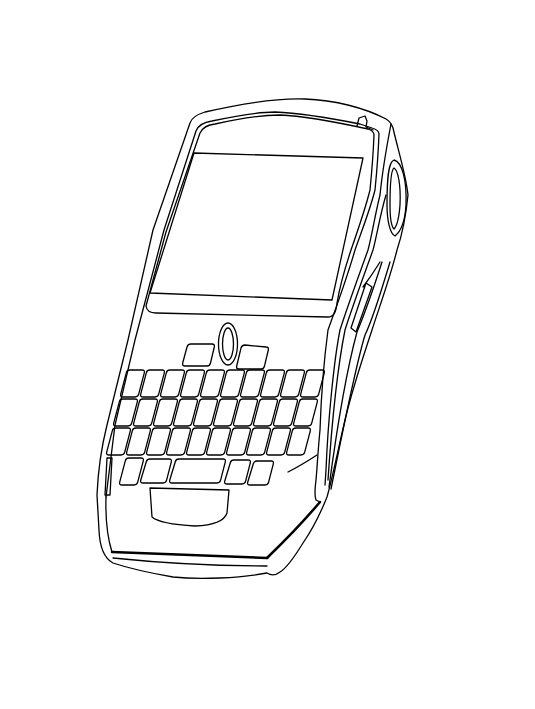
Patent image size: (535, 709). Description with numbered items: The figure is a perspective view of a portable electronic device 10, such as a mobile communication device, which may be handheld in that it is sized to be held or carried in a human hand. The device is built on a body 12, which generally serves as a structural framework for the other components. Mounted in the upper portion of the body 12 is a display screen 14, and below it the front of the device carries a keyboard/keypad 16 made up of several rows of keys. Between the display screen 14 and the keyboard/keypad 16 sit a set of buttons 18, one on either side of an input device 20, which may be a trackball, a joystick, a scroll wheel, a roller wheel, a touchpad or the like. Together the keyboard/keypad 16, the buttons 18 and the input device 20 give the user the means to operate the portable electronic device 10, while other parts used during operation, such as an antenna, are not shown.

The portable electronic device 10 is at (388, 63).
The body 12 is at (395, 143).
The display screen 14 is at (291, 228).
The keyboard/keypad 16 is at (268, 450).
The set of buttons 18 is at (186, 345).
The input device 20 is at (238, 338).